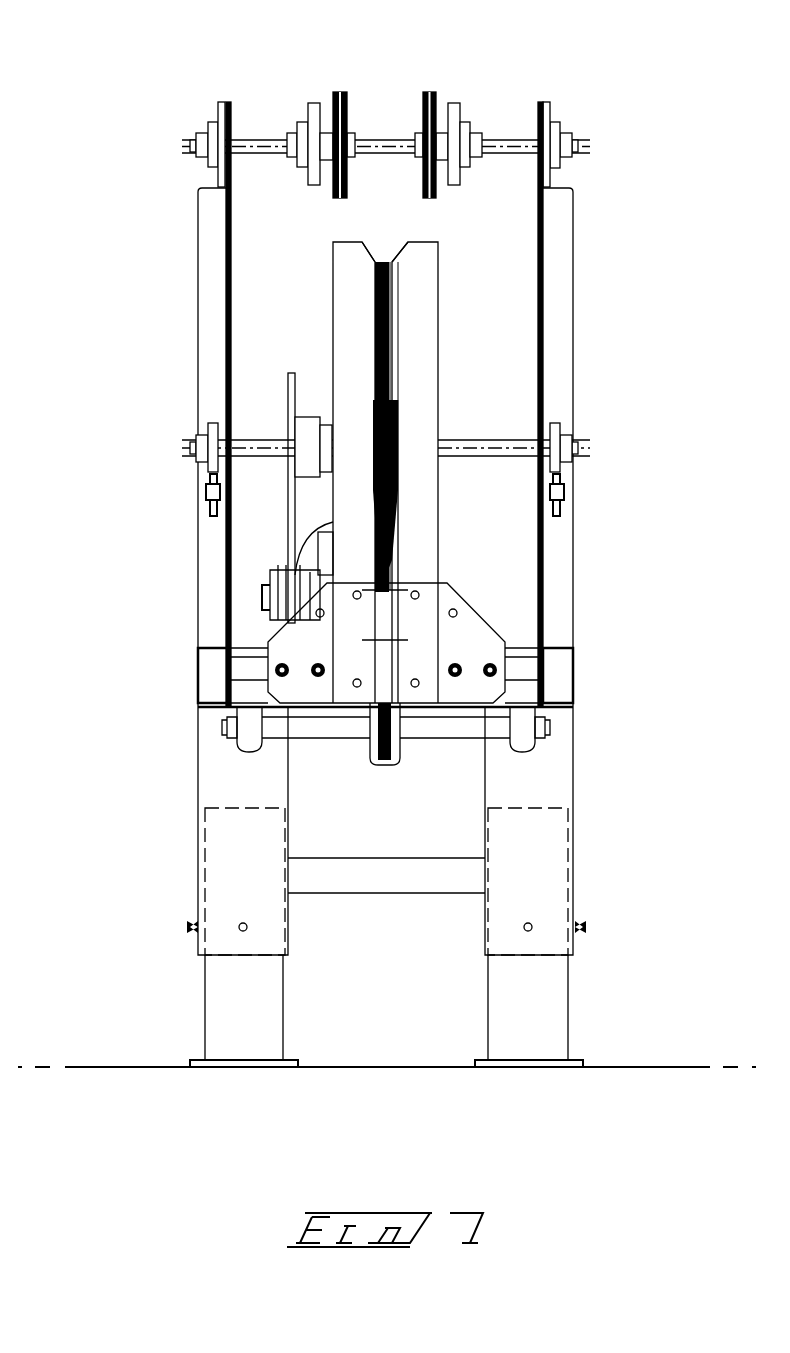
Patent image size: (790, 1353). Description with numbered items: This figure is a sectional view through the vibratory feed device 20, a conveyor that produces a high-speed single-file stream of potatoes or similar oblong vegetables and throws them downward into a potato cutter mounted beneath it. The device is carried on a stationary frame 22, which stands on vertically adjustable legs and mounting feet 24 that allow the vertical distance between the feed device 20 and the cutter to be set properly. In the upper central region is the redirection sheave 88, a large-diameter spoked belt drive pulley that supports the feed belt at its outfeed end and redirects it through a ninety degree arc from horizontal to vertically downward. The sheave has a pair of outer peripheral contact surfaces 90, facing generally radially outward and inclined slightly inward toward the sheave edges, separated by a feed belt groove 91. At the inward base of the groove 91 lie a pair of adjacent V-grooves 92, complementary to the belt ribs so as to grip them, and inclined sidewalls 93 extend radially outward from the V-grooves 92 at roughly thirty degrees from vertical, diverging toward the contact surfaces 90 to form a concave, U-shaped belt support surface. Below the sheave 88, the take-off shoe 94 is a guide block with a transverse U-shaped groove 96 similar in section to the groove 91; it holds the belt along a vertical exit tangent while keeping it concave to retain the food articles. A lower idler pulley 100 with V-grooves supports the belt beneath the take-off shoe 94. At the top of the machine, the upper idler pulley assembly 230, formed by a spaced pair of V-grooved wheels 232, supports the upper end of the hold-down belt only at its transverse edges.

The vibratory feed device 20 is at (108, 348).
The stationary frame 22 is at (212, 557).
The legs and mounting feet 24 is at (540, 868).
The redirection sheave 88 is at (442, 400).
The peripheral contact surfaces 90 is at (427, 250).
The feed belt groove 91 is at (386, 240).
The V-grooves 92 is at (400, 302).
The inclined sidewalls 93 is at (405, 332).
The take-off shoe 94 is at (348, 690).
The concave groove 96 is at (403, 692).
The lower idler pulley 100 is at (370, 752).
The upper idler pulley assembly 230 is at (356, 76).
The wheels 232 is at (420, 118).